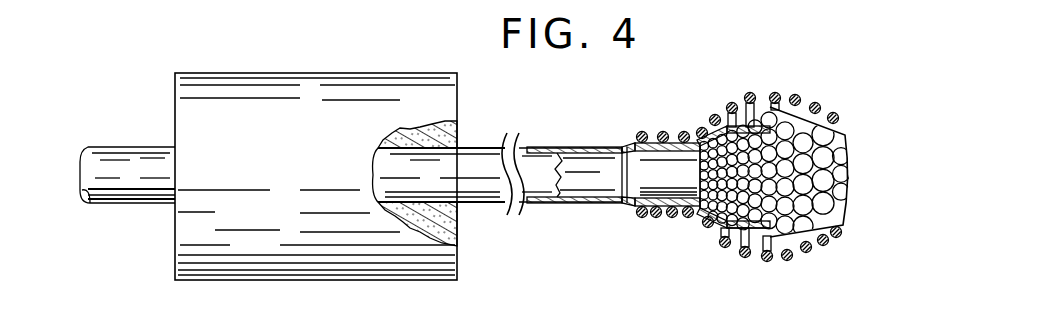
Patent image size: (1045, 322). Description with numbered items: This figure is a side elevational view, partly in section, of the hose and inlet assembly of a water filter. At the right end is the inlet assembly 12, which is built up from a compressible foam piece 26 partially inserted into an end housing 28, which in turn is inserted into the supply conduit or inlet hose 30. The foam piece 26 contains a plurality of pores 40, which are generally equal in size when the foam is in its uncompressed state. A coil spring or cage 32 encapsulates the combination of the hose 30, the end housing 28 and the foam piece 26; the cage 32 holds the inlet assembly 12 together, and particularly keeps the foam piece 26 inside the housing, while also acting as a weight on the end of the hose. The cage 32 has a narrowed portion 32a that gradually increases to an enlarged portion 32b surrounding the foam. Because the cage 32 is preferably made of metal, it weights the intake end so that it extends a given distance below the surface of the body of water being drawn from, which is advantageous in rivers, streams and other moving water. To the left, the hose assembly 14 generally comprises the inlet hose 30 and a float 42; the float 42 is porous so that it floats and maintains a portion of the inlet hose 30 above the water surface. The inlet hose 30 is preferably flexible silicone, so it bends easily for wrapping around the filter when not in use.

The inlet assembly 12 is at (671, 96).
The hose assembly 14 is at (175, 62).
The foam piece 26 is at (841, 213).
The end housing 28 is at (735, 236).
The inlet hose 30 is at (582, 205).
The coil spring or cage 32 is at (801, 96).
The narrowed portion 32a is at (630, 137).
The enlarged portion 32b is at (769, 80).
The pores 40 is at (746, 95).
The float 42 is at (250, 151).